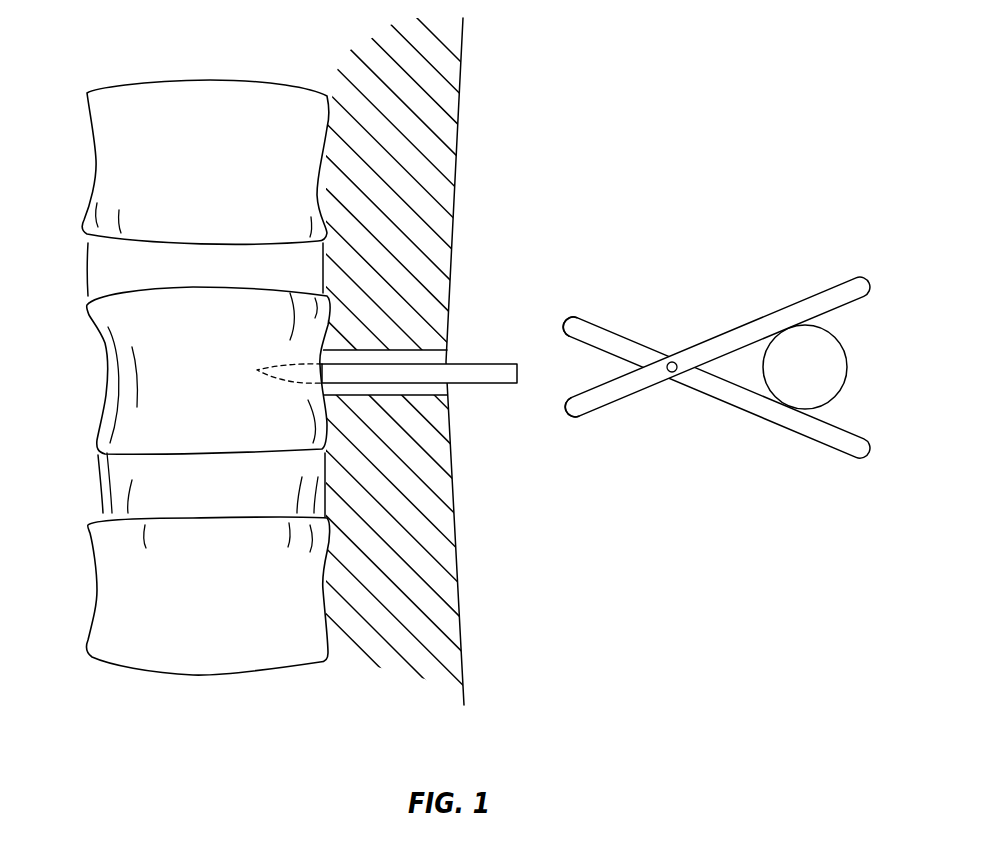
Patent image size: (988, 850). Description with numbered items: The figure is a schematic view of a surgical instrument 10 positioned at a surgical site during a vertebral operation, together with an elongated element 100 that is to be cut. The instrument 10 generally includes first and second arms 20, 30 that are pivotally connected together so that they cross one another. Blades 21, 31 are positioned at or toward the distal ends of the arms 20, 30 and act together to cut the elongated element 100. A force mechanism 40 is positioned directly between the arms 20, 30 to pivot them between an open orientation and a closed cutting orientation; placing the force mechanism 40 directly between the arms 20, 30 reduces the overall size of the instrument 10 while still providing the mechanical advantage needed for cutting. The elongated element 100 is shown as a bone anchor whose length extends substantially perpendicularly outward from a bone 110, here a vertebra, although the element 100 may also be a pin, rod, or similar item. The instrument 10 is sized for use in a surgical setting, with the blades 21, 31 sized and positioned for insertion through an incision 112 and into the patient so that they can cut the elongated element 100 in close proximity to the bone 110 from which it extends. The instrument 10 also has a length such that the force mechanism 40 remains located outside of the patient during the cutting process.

The surgical instrument 10 is at (716, 344).
The first arm 20 is at (700, 376).
The blade 21 is at (570, 337).
The second arm 30 is at (705, 359).
The blade 31 is at (575, 397).
The force mechanism 40 is at (828, 358).
The elongated element 100 is at (460, 370).
The bone 110 is at (130, 372).
The incision 112 is at (428, 357).